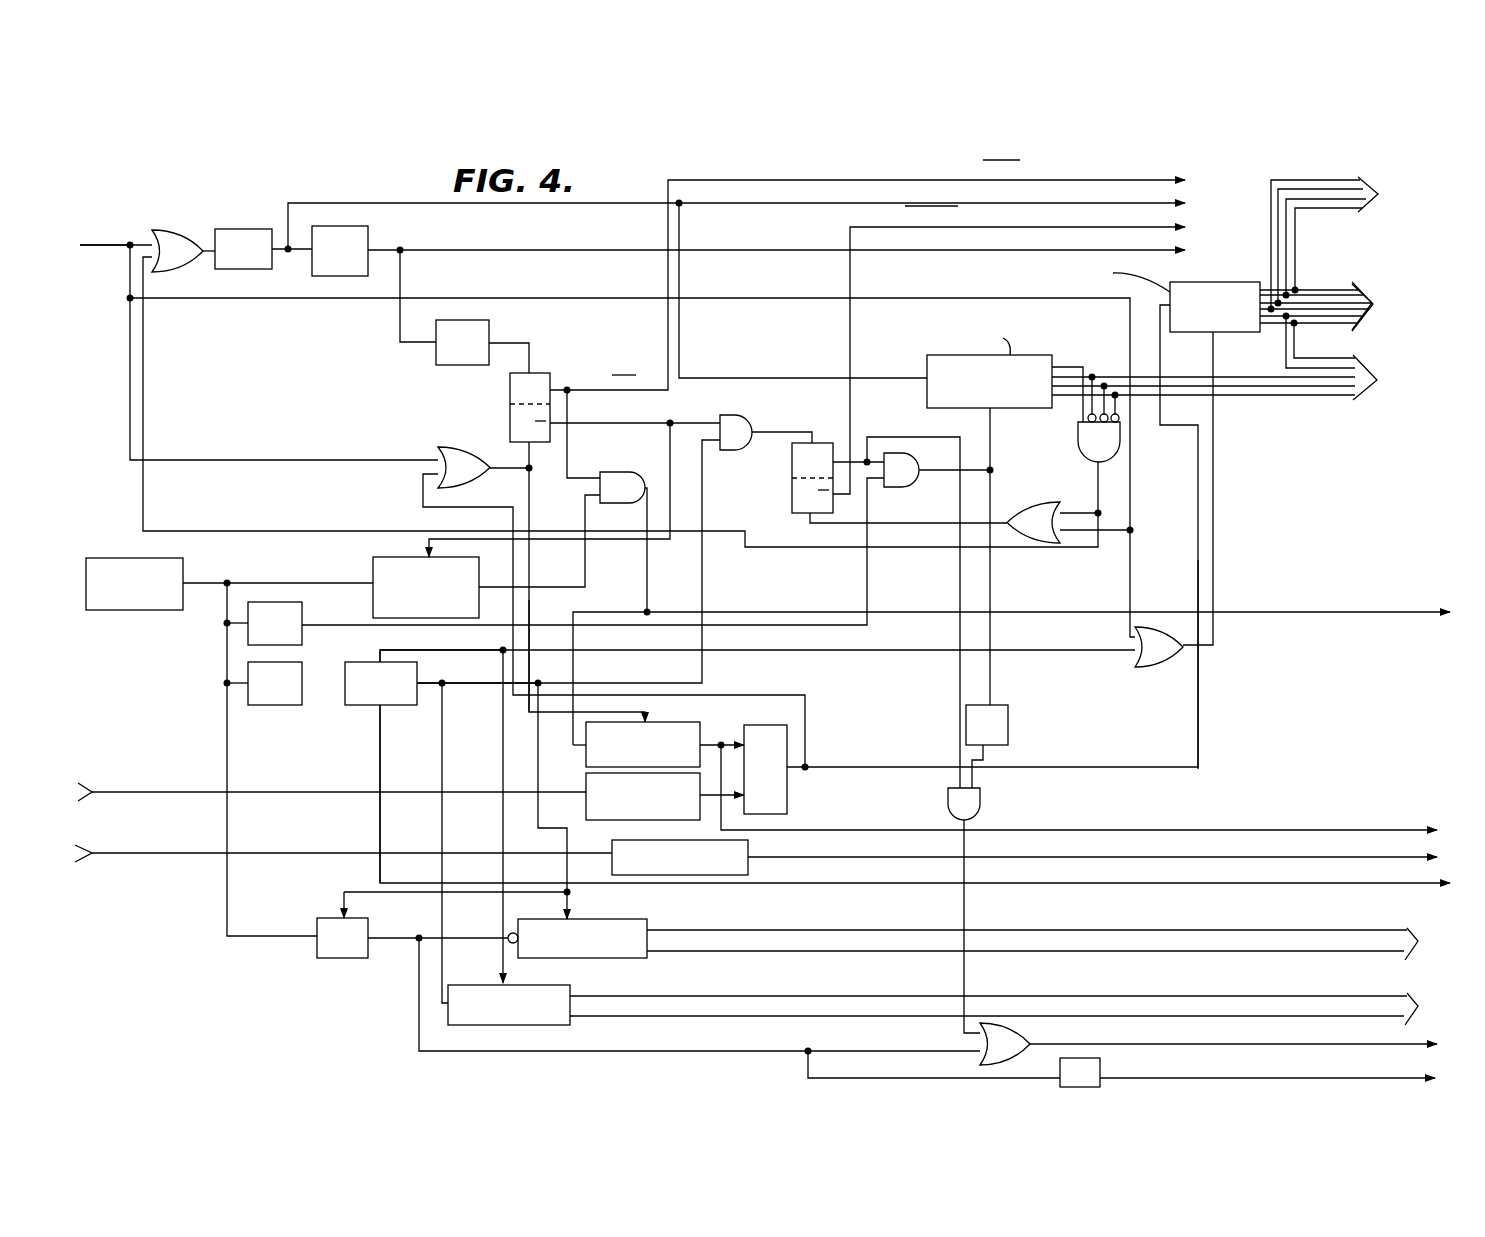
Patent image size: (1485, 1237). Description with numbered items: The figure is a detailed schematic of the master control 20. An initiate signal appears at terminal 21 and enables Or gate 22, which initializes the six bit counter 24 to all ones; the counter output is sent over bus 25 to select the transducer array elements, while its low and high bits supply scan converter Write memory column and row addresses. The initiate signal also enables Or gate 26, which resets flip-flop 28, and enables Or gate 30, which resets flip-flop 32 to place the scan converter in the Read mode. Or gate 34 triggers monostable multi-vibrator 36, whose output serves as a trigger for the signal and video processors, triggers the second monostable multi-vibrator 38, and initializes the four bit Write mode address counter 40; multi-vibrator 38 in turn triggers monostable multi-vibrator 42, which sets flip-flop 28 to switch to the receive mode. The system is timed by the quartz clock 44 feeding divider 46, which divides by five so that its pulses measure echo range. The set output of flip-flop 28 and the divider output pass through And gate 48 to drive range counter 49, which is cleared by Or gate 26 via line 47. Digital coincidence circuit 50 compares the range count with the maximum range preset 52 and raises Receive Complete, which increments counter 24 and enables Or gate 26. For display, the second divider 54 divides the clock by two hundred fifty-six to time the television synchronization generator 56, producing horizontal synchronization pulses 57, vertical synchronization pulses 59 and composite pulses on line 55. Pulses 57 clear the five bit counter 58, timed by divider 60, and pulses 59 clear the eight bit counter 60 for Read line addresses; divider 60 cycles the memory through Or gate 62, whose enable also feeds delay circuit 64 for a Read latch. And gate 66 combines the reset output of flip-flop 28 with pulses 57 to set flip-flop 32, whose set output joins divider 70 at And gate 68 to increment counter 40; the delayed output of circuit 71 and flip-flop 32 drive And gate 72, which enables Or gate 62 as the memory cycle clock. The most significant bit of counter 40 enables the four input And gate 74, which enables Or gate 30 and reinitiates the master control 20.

The master control 20 is at (396, 187).
The terminal 21 is at (152, 214).
The Or gate 22 is at (1175, 668).
The six bit counter 24 is at (1228, 282).
The bus 25 is at (1372, 305).
The Or gate 26 is at (460, 447).
The flip-flop 28 is at (510, 393).
The Or gate 30 is at (1048, 502).
The flip-flop 32 is at (792, 508).
The Or gate 34 is at (175, 270).
The monostable multi-vibrator 36 is at (258, 229).
The second monostable multi-vibrator 38 is at (368, 232).
The four bit Write mode address counter 40 is at (1045, 355).
The monostable multi-vibrator 42 is at (489, 332).
The 4.032 Mhz quartz clock 44 is at (160, 610).
The divider 46 is at (373, 568).
The line 47 is at (528, 705).
The And gate 48 is at (640, 503).
The range counter 49 is at (1198, 712).
The digital coincidence circuit 50 is at (790, 815).
The maximum range preset 52 is at (586, 782).
The second divider 54 is at (292, 705).
The line 55 is at (380, 768).
The television synchronization generator 56 is at (365, 705).
The horizontal synchronization pulses 57 is at (440, 688).
The five bit counter 58 is at (640, 958).
The vertical synchronization pulses 59 is at (380, 655).
The divider 60 is at (330, 958).
The Or gate 62 is at (980, 1042).
The delay circuit 64 is at (1062, 1062).
The And gate 66 is at (740, 452).
The And gate 68 is at (908, 455).
The divider 70 is at (302, 620).
The delay circuit 71 is at (1008, 724).
The And gate 72 is at (948, 797).
The four input And gate 74 is at (1078, 437).